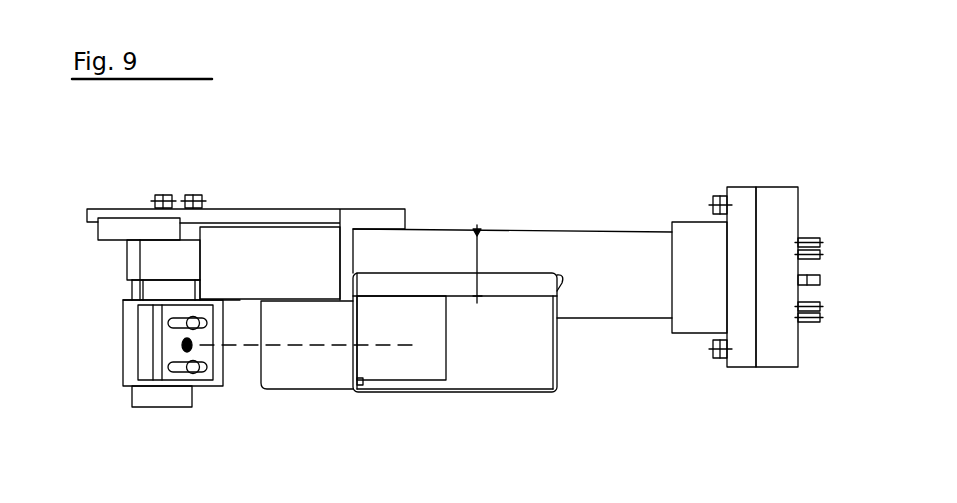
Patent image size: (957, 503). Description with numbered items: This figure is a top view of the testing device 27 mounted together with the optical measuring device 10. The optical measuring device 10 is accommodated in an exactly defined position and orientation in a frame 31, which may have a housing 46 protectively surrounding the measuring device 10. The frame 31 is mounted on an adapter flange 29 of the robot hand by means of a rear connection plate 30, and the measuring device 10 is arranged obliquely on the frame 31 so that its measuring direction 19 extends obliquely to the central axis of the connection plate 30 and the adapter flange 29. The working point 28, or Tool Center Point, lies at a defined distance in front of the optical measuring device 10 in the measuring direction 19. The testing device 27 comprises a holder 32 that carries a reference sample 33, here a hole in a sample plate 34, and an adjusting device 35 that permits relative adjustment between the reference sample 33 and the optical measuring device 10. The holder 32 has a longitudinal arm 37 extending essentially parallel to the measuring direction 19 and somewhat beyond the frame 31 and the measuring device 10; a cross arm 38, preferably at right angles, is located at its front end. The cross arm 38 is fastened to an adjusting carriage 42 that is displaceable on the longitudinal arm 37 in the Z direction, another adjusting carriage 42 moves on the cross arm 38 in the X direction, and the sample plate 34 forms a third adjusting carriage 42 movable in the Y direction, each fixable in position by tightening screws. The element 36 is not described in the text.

The optical measuring device 10 is at (419, 364).
The measuring direction 19 is at (307, 402).
The testing device 27 is at (470, 170).
The working point 28 is at (297, 420).
The adapter flange 29 is at (783, 210).
The connection plate 30 is at (746, 202).
The frame 31 is at (621, 255).
The holder 32 is at (246, 188).
The reference sample 33 is at (297, 420).
The sample plate 34 is at (168, 372).
The adjusting device 35 is at (221, 161).
The block 36 is at (390, 210).
The longitudinal arm 37 is at (303, 218).
The cross arm 38 is at (130, 400).
The adjusting carriage 42 is at (120, 218).
The housing 46 is at (485, 393).